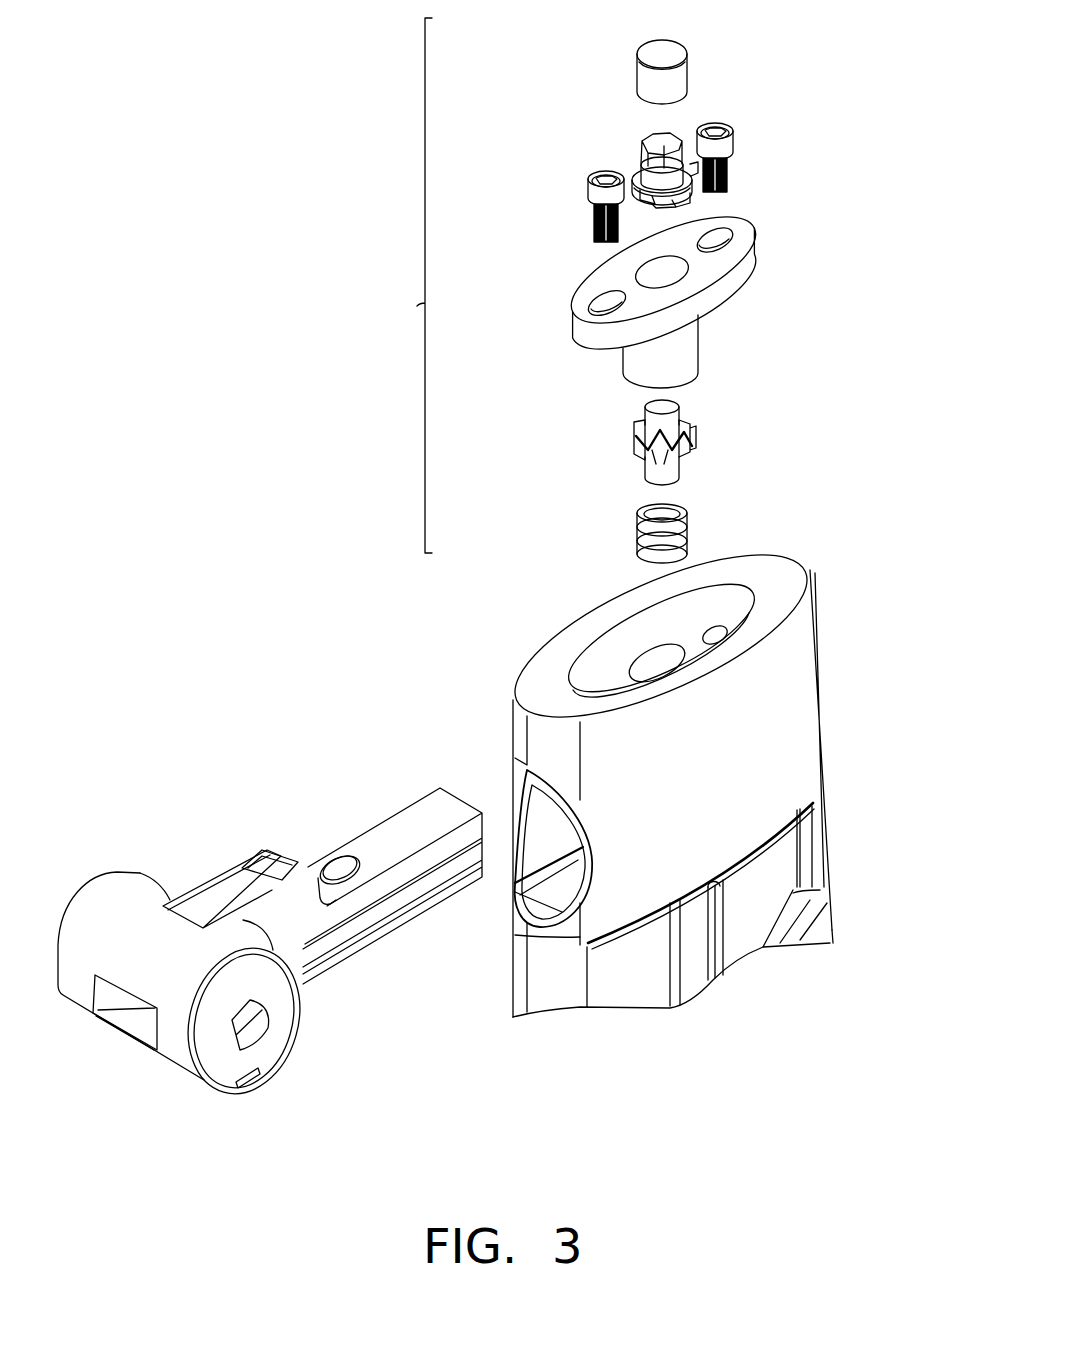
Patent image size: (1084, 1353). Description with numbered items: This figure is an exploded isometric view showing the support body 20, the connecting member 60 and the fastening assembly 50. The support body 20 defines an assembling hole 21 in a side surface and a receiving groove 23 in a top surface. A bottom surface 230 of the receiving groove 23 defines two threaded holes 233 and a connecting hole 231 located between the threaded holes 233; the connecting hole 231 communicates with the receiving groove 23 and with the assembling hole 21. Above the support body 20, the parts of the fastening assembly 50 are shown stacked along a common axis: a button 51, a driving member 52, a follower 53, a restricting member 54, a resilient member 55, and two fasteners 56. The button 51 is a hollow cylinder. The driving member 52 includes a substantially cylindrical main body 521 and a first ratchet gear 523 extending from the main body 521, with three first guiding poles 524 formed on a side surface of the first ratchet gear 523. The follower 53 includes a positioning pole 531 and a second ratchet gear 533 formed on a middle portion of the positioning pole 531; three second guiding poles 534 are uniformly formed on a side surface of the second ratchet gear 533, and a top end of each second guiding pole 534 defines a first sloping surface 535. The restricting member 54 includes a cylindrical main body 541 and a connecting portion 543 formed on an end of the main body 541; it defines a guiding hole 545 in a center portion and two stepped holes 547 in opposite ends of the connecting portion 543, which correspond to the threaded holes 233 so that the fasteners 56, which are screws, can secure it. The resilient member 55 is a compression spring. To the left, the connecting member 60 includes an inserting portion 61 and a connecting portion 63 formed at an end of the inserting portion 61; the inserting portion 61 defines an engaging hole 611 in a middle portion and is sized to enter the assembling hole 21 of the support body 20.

The support body 20 is at (664, 769).
The assembling hole 21 is at (555, 803).
The receiving groove 23 is at (713, 607).
The bottom surface 230 is at (613, 675).
The connecting hole 231 is at (663, 662).
The threaded holes 233 is at (717, 637).
The fastening assembly 50 is at (407, 285).
The button 51 is at (642, 72).
The driving member 52 is at (633, 137).
The main body 521 is at (670, 173).
The first ratchet gear 523 is at (650, 203).
The first guiding poles 524 is at (697, 165).
The follower 53 is at (630, 454).
The positioning pole 531 is at (670, 408).
The second ratchet gear 533 is at (683, 452).
The second guiding poles 534 is at (650, 462).
The first sloping surface 535 is at (720, 484).
The restricting member 54 is at (642, 292).
The main body 541 is at (690, 358).
The connecting portion 543 is at (707, 297).
The guiding hole 545 is at (667, 270).
The stepped holes 547 is at (722, 240).
The resilient member 55 is at (640, 518).
The fasteners 56 is at (593, 183).
The connecting member 60 is at (270, 955).
The inserting portion 61 is at (322, 842).
The engaging hole 611 is at (335, 867).
The connecting portion 63 is at (112, 913).